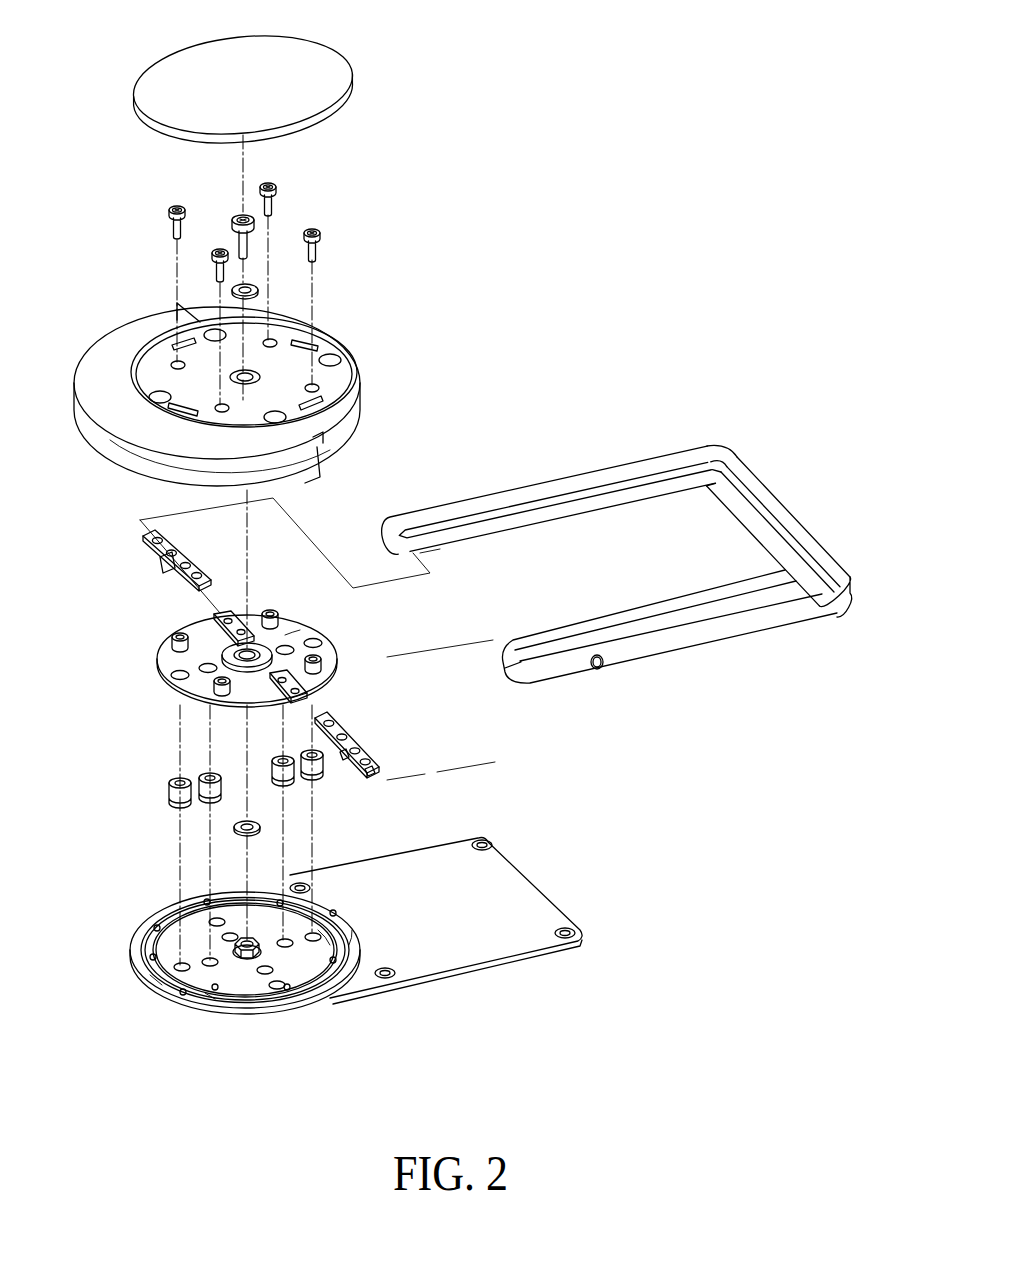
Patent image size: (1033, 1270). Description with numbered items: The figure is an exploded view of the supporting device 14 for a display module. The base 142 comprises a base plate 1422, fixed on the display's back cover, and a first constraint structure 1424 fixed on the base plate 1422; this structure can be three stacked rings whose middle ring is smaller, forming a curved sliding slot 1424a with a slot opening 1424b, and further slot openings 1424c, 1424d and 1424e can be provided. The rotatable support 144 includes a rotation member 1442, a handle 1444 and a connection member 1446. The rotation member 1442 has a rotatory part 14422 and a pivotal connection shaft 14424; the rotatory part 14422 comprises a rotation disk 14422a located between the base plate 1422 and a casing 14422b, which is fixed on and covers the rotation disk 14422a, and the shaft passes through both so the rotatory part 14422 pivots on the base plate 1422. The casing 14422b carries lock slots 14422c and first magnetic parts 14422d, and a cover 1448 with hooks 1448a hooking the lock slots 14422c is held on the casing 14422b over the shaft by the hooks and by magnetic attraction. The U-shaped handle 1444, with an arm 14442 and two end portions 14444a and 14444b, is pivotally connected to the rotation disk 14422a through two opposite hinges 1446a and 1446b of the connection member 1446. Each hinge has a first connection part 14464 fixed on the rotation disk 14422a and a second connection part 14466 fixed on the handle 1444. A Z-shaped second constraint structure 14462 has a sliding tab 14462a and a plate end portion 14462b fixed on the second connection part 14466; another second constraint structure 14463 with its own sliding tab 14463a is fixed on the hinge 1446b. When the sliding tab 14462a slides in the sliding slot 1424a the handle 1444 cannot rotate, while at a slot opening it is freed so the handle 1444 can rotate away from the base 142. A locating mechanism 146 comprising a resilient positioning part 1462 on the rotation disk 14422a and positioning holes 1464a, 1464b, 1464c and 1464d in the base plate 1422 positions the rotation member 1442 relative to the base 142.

The supporting device 14 is at (722, 70).
The base 142 is at (379, 971).
The base plate 1422 is at (500, 947).
The first constraint structure 1424 is at (247, 979).
The sliding slot 1424a is at (210, 997).
The slot opening 1424b is at (158, 982).
The slot opening 1424c is at (330, 990).
The slot opening 1424d is at (182, 967).
The slot opening 1424e is at (355, 931).
The rotatable support 144 is at (702, 338).
The rotation member 1442 is at (445, 190).
The rotatory part 14422 is at (305, 456).
The rotation disk 14422a is at (290, 633).
The casing 14422b is at (338, 387).
The lock slots 14422c is at (298, 340).
The first magnetic parts 14422d is at (327, 358).
The pivotal connection shaft 14424 is at (250, 247).
The handle 1444 is at (614, 503).
The handle arm 14442 is at (750, 493).
The end portion 14444a is at (557, 673).
The end portion 14444b is at (523, 471).
The connection member 1446 is at (269, 630).
The hinge 1446a is at (434, 717).
The hinge 1446b is at (194, 532).
The second constraint structure 14462 is at (327, 734).
The sliding tab 14462a is at (343, 757).
The plate end portion 14462b is at (368, 773).
The second constraint structure 14463 is at (137, 563).
The sliding tab 14463a is at (167, 570).
The first connection part 14464 is at (357, 712).
The second connection part 14466 is at (387, 747).
The locating mechanism 146 is at (83, 745).
The resilient positioning part 1462 is at (170, 790).
The positioning hole 1464a is at (215, 943).
The positioning hole 1464b is at (145, 970).
The positioning hole 1464c is at (275, 987).
The positioning hole 1464d is at (328, 930).
The cover 1448 is at (247, 120).
The hooks 1448a is at (188, 160).